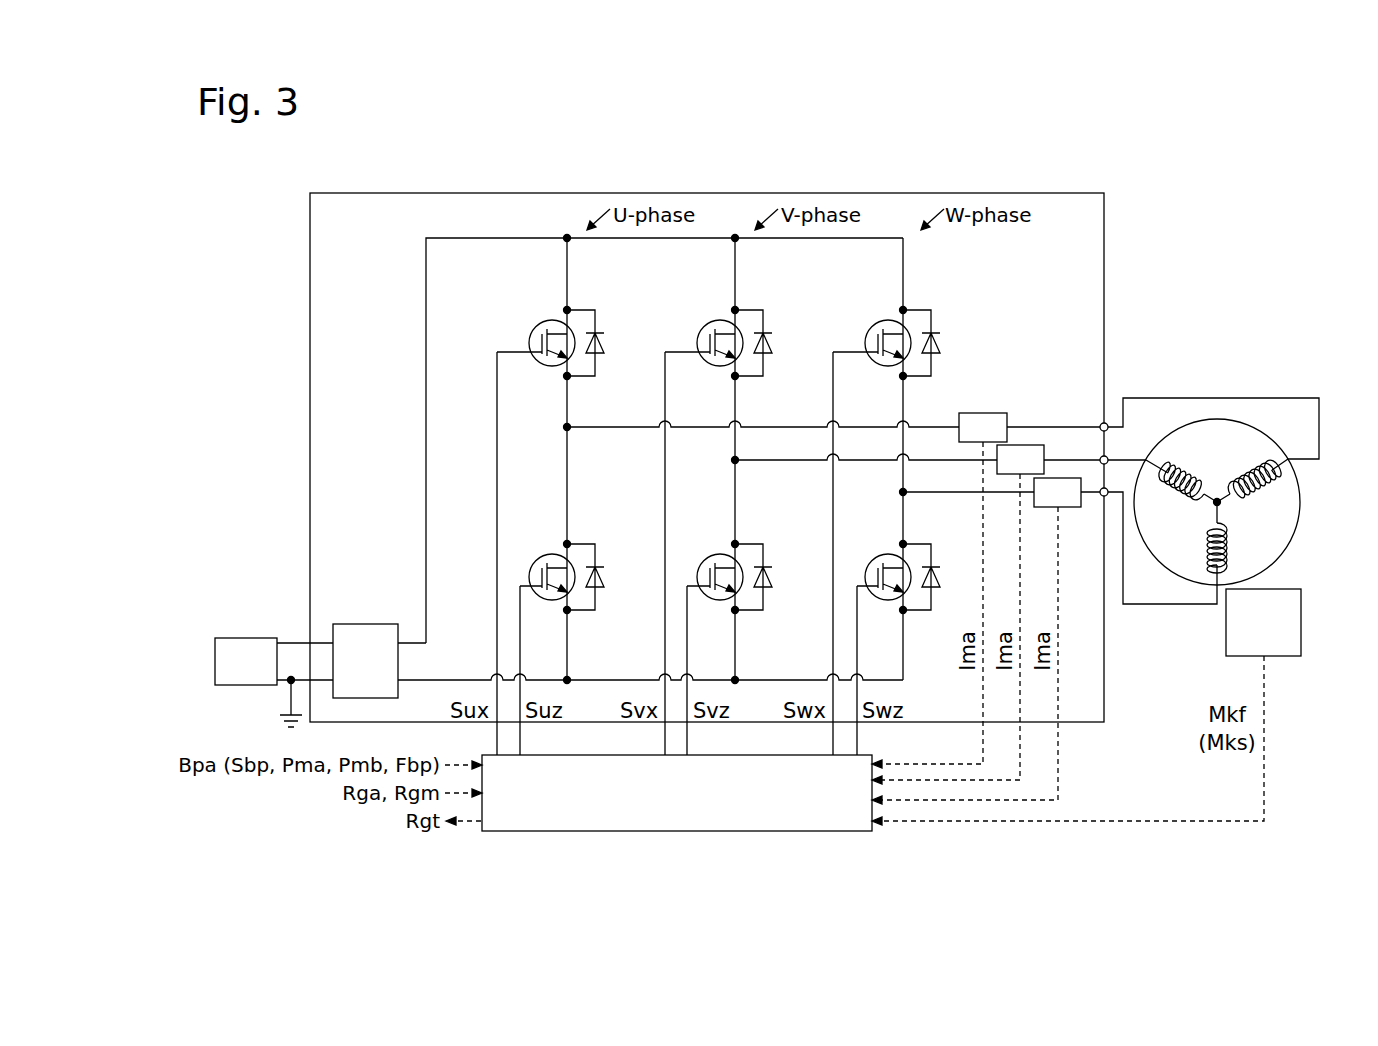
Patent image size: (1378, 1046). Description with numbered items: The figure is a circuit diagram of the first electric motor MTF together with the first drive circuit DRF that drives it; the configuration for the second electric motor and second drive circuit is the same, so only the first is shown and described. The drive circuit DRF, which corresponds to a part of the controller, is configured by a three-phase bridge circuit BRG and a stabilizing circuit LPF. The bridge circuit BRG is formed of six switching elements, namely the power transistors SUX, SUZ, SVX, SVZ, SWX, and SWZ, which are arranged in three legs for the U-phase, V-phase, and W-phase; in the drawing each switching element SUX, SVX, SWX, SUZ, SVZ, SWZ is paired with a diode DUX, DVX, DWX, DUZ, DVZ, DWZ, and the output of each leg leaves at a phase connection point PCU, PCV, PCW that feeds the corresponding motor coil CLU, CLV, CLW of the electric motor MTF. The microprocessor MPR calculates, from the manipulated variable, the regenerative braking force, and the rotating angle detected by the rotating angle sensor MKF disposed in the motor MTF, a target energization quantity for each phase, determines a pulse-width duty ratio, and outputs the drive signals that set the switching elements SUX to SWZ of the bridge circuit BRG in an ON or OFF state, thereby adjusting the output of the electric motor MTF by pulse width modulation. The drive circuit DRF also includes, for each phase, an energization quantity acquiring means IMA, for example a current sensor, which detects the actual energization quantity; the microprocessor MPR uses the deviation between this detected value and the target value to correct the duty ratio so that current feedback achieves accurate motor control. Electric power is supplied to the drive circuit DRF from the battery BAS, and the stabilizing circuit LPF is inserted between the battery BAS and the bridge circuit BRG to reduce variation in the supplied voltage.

The first drive circuit DRF is at (424, 193).
The 3-phase bridge circuit BRG is at (494, 325).
The switching element SUX is at (541, 328).
The U-phase upper diode DUX is at (601, 333).
The switching element SVX is at (709, 328).
The V-phase upper diode DVX is at (769, 333).
The switching element SWX is at (877, 328).
The W-phase upper diode DWX is at (937, 333).
The switching element SUZ is at (541, 561).
The U-phase lower diode DUZ is at (601, 566).
The switching element SVZ is at (709, 561).
The V-phase lower diode DVZ is at (769, 566).
The switching element SWZ is at (877, 561).
The W-phase lower diode DWZ is at (937, 566).
The U-phase connection point PCU is at (567, 463).
The V-phase connection point PCV is at (735, 480).
The W-phase connection point PCW is at (903, 499).
The energization quantity acquiring means IMA is at (1020, 460).
The battery BAS is at (246, 661).
The stabilizing circuit LPF is at (365, 661).
The microprocessor MPR is at (677, 793).
The first electric motor MTF is at (1298, 513).
The U-phase coil CLU is at (1248, 465).
The V-phase coil CLV is at (1165, 486).
The W-phase coil CLW is at (1223, 537).
The rotating angle sensor MKF is at (1263, 622).